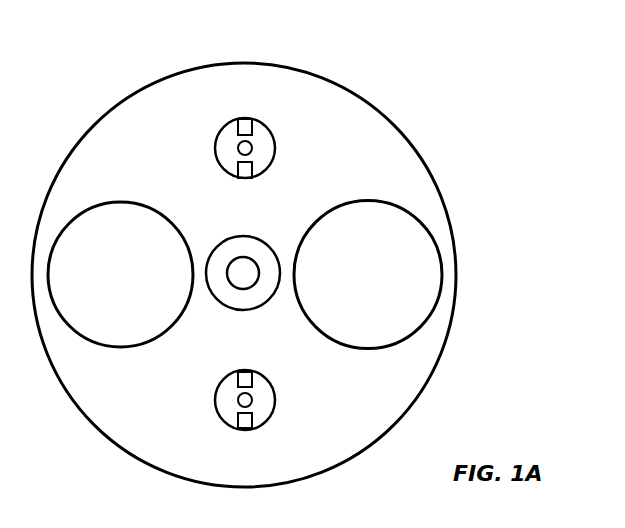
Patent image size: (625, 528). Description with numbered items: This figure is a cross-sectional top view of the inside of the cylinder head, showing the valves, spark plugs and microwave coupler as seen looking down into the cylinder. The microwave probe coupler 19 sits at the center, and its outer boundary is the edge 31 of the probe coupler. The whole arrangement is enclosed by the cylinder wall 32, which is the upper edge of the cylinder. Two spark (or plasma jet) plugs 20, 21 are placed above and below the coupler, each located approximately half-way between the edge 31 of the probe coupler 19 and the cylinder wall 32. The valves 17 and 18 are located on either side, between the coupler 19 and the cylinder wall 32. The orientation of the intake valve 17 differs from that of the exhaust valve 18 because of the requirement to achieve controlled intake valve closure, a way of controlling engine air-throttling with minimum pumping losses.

The cylinder wall 32 is at (90, 131).
The intake valve 17 is at (120, 274).
The exhaust valve 18 is at (368, 275).
The edge of the probe coupler 31 is at (212, 240).
The microwave probe coupler 19 is at (238, 295).
The spark plug 20 is at (296, 163).
The spark plug 21 is at (274, 397).